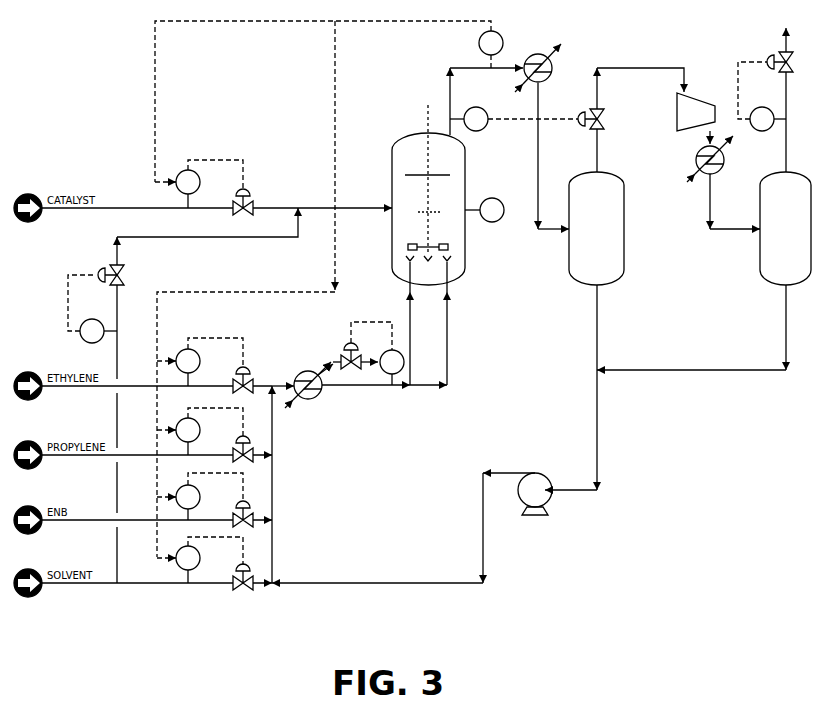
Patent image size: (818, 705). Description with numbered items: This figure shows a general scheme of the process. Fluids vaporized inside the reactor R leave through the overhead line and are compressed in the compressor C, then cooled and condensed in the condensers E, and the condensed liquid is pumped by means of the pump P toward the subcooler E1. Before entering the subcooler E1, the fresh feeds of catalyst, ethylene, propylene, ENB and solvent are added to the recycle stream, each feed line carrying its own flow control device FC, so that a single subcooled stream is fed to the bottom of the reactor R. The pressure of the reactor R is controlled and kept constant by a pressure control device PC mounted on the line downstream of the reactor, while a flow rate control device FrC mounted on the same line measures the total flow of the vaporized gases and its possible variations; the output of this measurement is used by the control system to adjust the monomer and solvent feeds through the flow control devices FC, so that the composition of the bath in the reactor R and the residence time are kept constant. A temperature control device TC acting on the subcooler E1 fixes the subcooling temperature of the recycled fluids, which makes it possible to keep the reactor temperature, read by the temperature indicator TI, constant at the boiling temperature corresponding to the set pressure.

The reactor R is at (388, 155).
The condensers E is at (524, 54).
The subcooler E1 is at (296, 374).
The compressor C is at (668, 137).
The pump P is at (554, 518).
The flow control device FC is at (427, 338).
The temperature control device TC is at (392, 367).
The temperature indicator TI is at (484, 210).
The pressure control device PC is at (469, 119).
The flow rate control device FrC is at (491, 43).